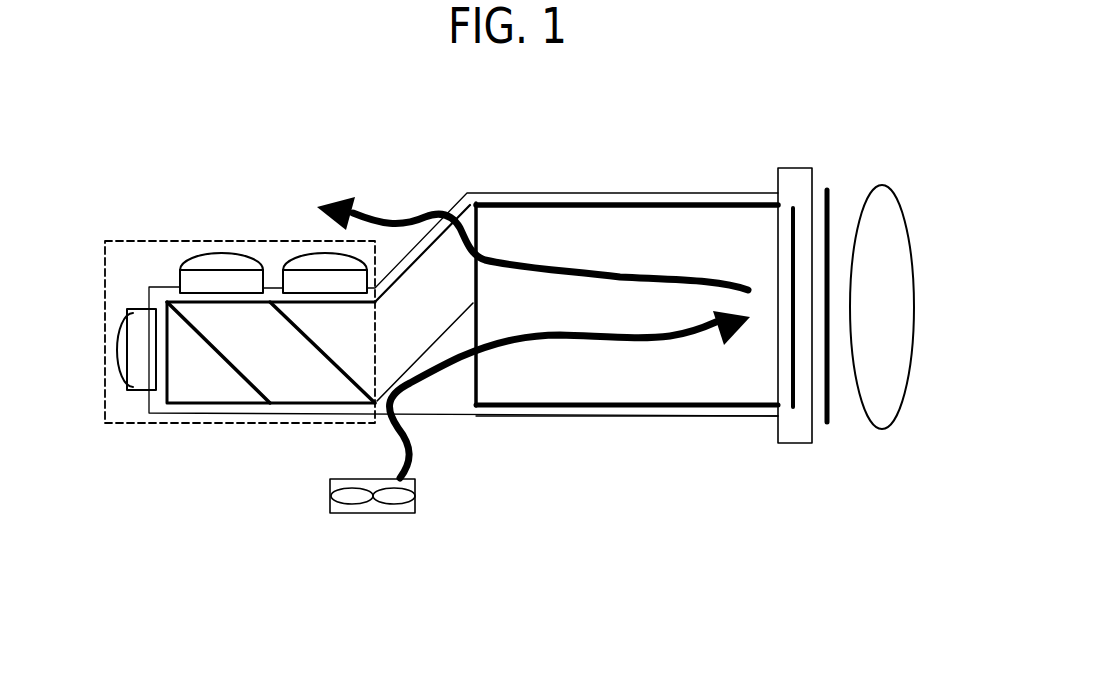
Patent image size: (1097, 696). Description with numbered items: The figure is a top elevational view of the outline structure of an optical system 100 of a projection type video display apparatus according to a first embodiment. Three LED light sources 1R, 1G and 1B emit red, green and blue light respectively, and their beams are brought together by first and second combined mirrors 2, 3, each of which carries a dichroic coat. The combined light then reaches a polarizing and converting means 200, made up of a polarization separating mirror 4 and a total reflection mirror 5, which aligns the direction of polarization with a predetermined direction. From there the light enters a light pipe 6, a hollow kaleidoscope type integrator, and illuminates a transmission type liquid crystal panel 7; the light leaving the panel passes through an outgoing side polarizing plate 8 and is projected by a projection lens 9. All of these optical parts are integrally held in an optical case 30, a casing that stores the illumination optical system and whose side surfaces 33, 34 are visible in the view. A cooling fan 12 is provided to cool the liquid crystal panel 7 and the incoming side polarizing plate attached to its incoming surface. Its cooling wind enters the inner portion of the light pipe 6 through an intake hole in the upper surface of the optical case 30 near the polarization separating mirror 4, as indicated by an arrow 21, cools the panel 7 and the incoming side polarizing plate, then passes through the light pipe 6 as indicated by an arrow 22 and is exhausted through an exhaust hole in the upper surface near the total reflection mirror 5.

The light source unit 100 is at (257, 240).
The LED light source 1G is at (210, 263).
The LED light source 1R is at (318, 263).
The LED light source 1B is at (128, 387).
The first combined mirror 2 is at (245, 378).
The second combined mirror 3 is at (343, 380).
The polarizing and converting means 200 is at (475, 130).
The polarization separating mirror 4 is at (450, 327).
The total reflection mirror 5 is at (467, 192).
The optical case 30 is at (527, 197).
The side surface 33 is at (687, 192).
The side surface 34 is at (663, 417).
The light pipe 6 is at (600, 407).
The arrow 22 is at (558, 268).
The arrow 21 is at (412, 457).
The cooling fan 12 is at (408, 505).
The transmission type liquid crystal panel 7 is at (788, 423).
The outgoing side polarizing plate 8 is at (825, 422).
The projection lens 9 is at (877, 402).